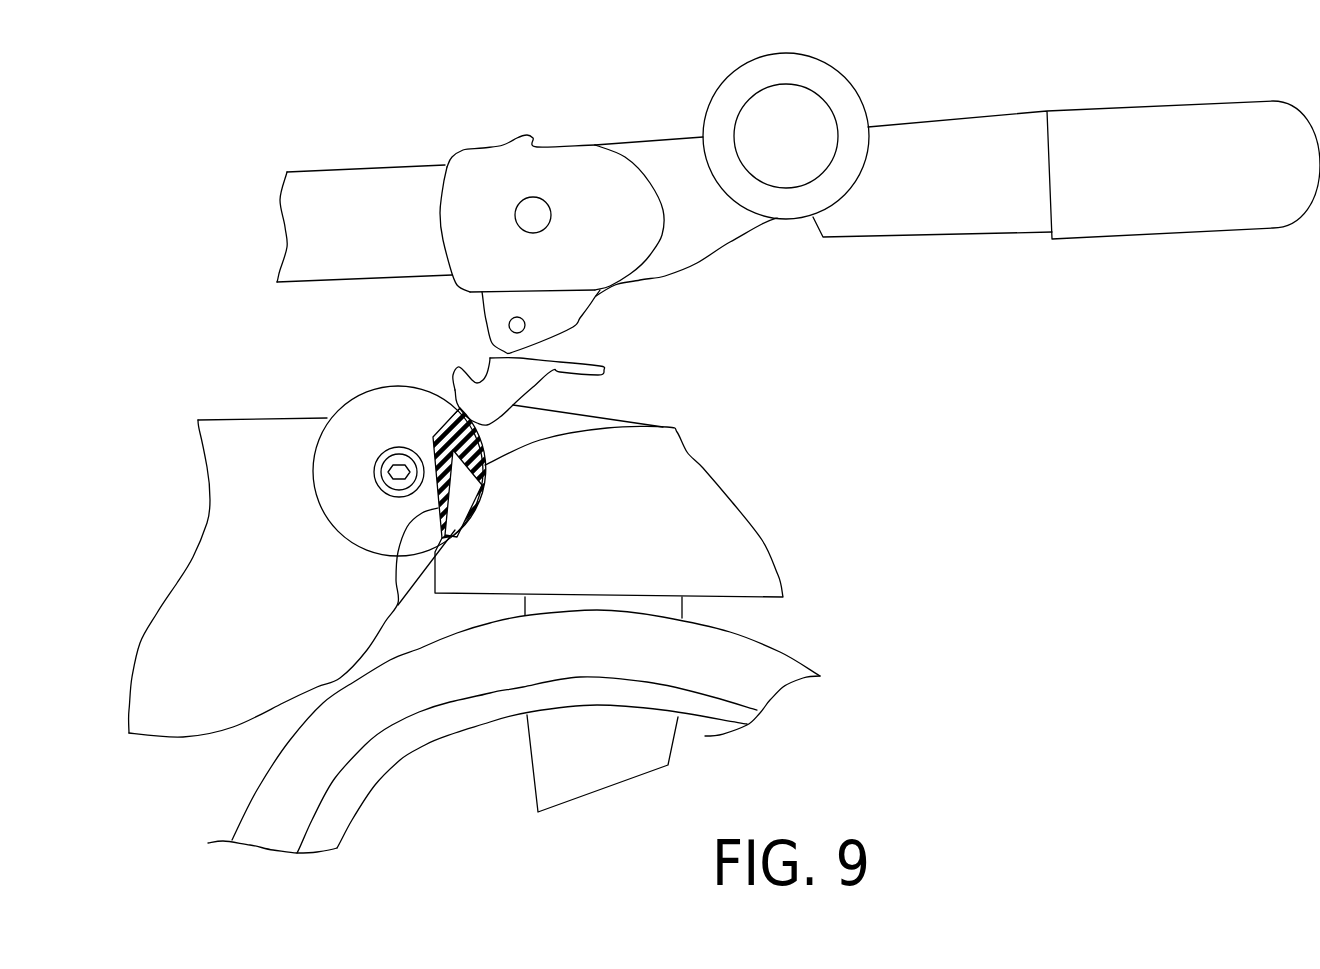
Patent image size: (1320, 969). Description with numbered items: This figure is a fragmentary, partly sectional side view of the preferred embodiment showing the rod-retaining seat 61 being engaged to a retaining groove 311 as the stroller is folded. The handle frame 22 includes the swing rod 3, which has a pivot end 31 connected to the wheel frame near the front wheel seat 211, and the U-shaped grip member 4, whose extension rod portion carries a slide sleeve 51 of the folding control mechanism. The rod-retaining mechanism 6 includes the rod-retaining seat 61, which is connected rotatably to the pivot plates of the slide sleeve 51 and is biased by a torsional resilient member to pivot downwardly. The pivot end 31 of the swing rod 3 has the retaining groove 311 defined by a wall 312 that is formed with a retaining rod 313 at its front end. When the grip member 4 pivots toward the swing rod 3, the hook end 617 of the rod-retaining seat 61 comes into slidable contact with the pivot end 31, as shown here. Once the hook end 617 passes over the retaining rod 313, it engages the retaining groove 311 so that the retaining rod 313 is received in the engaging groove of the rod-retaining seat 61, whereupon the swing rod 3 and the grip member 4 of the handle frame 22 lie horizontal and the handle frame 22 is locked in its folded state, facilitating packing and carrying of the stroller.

The grip member 4 is at (378, 167).
The slide sleeve 51 is at (565, 180).
The handle frame 22 is at (930, 117).
The rod-retaining seat 61 is at (555, 338).
The rod-retaining mechanism 6 is at (507, 365).
The hook end 617 is at (463, 387).
The pivot end 31 is at (367, 432).
The retaining groove 311 is at (470, 487).
The wall 312 is at (395, 590).
The retaining rod 313 is at (670, 427).
The front wheel seat 211 is at (680, 498).
The swing rod 3 is at (227, 617).